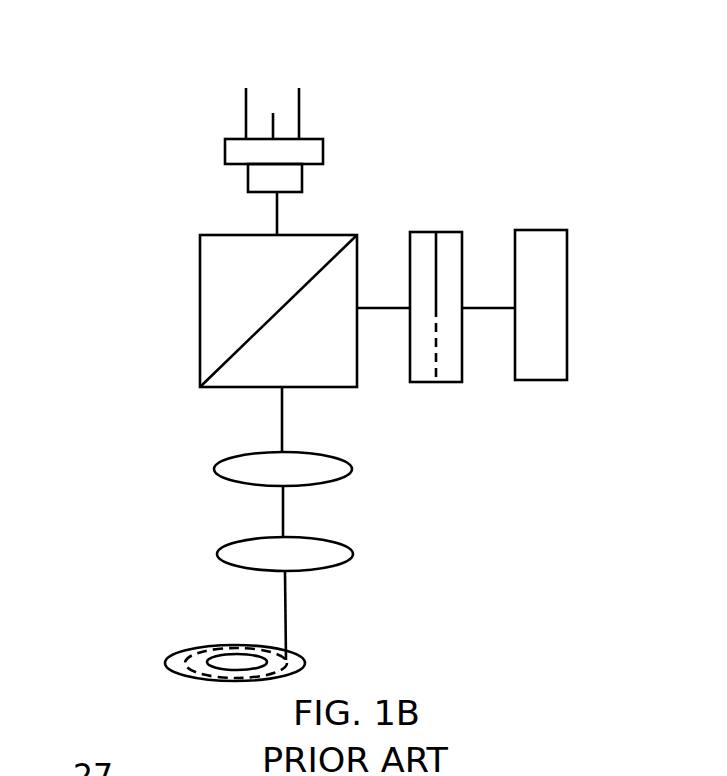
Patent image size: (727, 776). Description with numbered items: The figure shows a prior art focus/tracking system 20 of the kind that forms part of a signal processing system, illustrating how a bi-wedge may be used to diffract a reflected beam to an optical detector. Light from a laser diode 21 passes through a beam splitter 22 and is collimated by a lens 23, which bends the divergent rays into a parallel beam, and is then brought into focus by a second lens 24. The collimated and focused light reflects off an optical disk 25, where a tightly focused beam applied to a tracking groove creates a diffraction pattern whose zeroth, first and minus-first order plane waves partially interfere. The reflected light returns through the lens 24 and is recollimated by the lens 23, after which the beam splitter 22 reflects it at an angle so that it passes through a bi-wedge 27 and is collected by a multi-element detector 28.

The focus/tracking system 20 is at (210, 89).
The laser diode 21 is at (225, 140).
The beam splitter 22 is at (197, 238).
The lens 23 is at (207, 468).
The lens 24 is at (207, 553).
The optical disk 25 is at (152, 662).
The bi-wedge 27 is at (435, 230).
The multi-element detector 28 is at (538, 228).